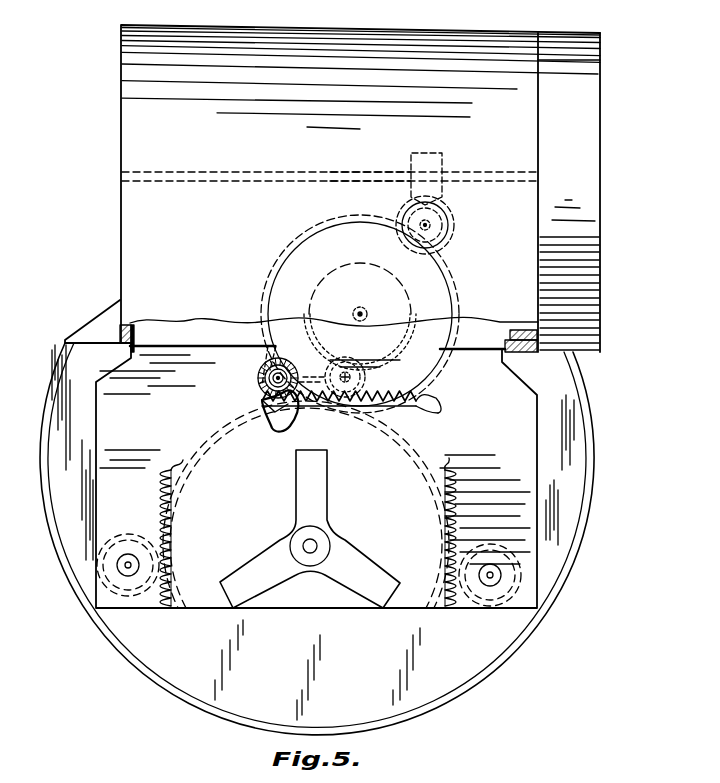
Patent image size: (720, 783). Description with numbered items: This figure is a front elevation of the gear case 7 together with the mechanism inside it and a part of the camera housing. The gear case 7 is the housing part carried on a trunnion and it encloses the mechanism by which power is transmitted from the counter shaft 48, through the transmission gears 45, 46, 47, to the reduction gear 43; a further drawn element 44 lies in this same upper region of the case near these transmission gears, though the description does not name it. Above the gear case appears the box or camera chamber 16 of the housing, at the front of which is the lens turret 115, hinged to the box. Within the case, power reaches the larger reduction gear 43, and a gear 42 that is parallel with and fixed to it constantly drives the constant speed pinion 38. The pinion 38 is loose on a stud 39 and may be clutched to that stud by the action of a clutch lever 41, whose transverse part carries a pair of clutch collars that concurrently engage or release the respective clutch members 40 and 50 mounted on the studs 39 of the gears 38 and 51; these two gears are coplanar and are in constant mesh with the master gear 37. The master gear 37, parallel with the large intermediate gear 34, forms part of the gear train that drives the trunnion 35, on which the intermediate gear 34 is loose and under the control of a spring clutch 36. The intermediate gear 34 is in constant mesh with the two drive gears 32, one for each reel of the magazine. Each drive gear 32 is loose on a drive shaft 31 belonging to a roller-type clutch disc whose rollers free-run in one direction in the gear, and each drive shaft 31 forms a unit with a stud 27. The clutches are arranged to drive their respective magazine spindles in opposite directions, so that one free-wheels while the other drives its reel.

The gear case 7 is at (42, 439).
The camera chamber 16 is at (131, 229).
The lens turret 115 is at (582, 182).
The stud 27 is at (124, 566).
The drive shaft 31 is at (166, 556).
The drive gear 32 is at (138, 540).
The intermediate gear 34 is at (176, 468).
The trunnion 35 is at (306, 544).
The spring clutch 36 is at (320, 484).
The master gear 37 is at (260, 404).
The constant speed pinion 38 is at (412, 394).
The stud 39 is at (358, 358).
The clutch member 40 is at (366, 375).
The clutch lever 41 is at (285, 368).
The gear 42 is at (440, 282).
The reduction gear 43 is at (416, 408).
The pinion 44 is at (402, 218).
The transmission gear 45 is at (460, 232).
The transmission gear 46 is at (455, 214).
The transmission gear 47 is at (446, 160).
The counter shaft 48 is at (348, 172).
The clutch member 50 is at (260, 356).
The gear 51 is at (260, 382).